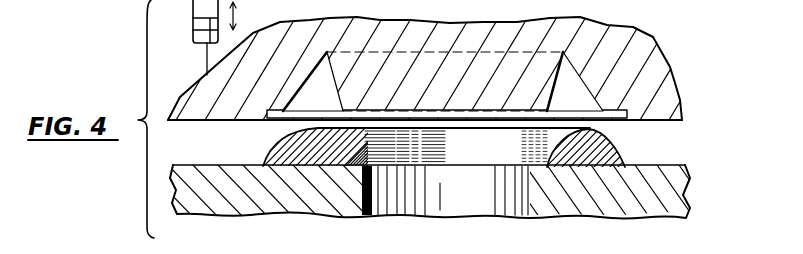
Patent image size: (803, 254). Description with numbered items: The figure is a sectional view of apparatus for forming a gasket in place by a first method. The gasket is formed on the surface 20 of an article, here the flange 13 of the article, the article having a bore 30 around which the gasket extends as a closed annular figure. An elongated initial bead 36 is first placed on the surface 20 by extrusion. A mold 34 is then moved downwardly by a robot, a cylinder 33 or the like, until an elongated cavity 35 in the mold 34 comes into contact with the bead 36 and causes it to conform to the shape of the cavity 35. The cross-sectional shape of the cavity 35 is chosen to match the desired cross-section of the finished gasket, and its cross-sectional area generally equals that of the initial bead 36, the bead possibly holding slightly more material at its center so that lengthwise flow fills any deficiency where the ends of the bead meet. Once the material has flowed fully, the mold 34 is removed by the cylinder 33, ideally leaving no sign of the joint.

The flange 13 is at (240, 197).
The surface 20 is at (248, 163).
The bore 30 is at (478, 196).
The cylinder 33 is at (193, 36).
The mold 34 is at (673, 70).
The elongated cavity 35 is at (578, 103).
The initial bead 36 is at (623, 156).